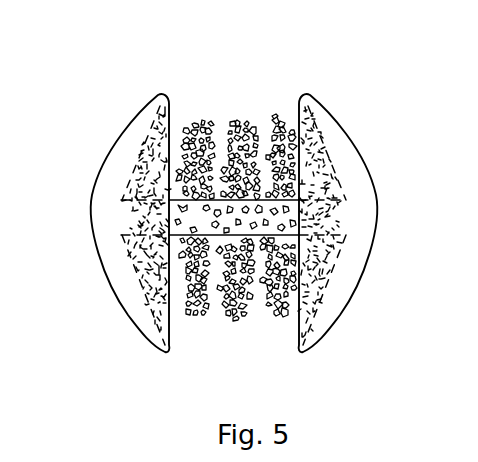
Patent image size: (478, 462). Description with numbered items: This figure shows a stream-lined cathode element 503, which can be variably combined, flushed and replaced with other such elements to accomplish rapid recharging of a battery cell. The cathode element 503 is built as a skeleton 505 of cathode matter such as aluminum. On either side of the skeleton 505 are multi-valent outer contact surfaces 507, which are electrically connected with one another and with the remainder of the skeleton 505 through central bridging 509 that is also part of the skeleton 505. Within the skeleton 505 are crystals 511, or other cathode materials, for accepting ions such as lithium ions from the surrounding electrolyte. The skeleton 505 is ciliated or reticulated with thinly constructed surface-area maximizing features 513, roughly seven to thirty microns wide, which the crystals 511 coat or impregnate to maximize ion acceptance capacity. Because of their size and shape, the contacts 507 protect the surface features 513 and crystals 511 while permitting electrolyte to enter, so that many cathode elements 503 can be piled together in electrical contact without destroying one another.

The cathode element 503 is at (139, 355).
The skeleton 505 is at (128, 210).
The outer contact surfaces 507 is at (84, 250).
The central bridging 509 is at (242, 234).
The crystals 511 is at (229, 193).
The surface-area maximizing features 513 is at (245, 127).